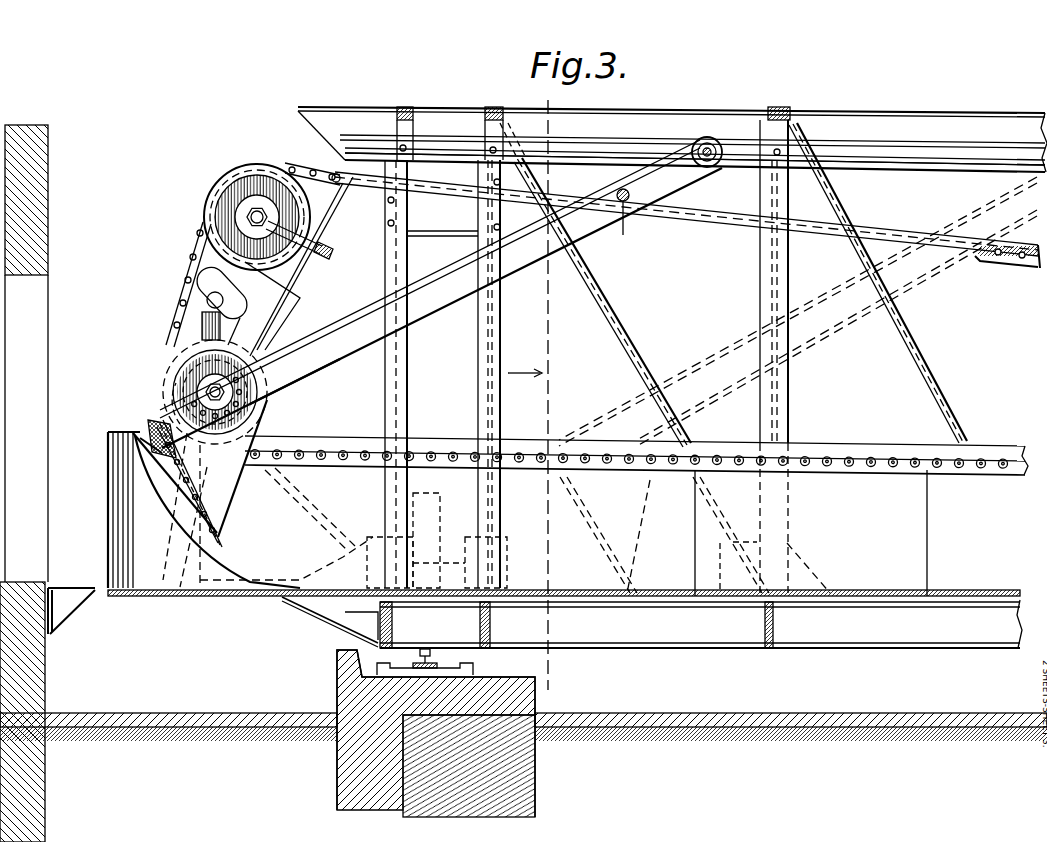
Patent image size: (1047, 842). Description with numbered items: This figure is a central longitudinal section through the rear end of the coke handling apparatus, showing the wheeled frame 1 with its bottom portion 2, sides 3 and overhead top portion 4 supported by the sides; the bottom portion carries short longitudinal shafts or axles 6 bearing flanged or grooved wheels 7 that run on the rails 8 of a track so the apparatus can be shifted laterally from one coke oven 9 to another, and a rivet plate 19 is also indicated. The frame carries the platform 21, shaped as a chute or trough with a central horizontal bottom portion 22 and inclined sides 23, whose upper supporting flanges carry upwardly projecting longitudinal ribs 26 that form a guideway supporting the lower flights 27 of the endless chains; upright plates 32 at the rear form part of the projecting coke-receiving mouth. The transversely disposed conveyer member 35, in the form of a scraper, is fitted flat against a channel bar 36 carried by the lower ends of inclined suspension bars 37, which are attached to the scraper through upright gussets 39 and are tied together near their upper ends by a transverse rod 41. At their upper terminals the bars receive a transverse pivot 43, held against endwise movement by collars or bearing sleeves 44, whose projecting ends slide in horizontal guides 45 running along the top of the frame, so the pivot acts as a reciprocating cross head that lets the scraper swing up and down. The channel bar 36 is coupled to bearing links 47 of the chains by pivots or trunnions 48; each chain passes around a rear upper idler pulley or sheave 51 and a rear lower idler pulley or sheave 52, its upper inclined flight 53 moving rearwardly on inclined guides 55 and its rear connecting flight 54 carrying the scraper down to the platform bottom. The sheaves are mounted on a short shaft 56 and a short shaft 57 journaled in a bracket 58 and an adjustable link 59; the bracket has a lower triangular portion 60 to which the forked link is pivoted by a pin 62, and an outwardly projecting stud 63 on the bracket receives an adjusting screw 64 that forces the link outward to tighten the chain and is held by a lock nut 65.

The wheeled frame 1 is at (676, 358).
The bottom portion 2 is at (712, 649).
The sides 3 is at (760, 281).
The overhead top portion 4 is at (672, 127).
The short longitudinal shafts or axles 6 is at (547, 388).
The flanged or grooved wheels 7 is at (445, 659).
The rails 8 is at (416, 664).
The coke oven 9 is at (50, 332).
The rivet plate 19 is at (215, 416).
The platform 21 is at (335, 510).
The central horizontal bottom portion 22 is at (663, 601).
The inclined sides 23 is at (695, 520).
The longitudinal ribs 26 is at (356, 468).
The lower flights 27 is at (357, 438).
The upright plates 32 is at (204, 510).
The conveyer member 35 is at (224, 547).
The channel bar 36 is at (150, 428).
The suspension bars 37 is at (368, 327).
The gussets 39 is at (228, 500).
The transverse rod 41 is at (624, 222).
The transverse pivot 43 is at (708, 168).
The collars or bearing sleeves 44 is at (709, 137).
The horizontal guides 45 is at (887, 156).
The bearing links 47 is at (143, 452).
The pivots or trunnions 48 is at (183, 404).
The rear upper idler pulley or sheave 51 is at (242, 172).
The rear lower idler pulley or sheave 52 is at (165, 372).
The upper inclined flight 53 is at (1007, 262).
The rear connecting flight 54 is at (188, 268).
The inclined guides 55 is at (698, 222).
The short shaft 56 is at (258, 211).
The short shaft 57 is at (288, 350).
The bracket 58 is at (200, 322).
The adjustable link 59 is at (212, 256).
The lower triangular portion 60 is at (220, 334).
The pin 62 is at (207, 298).
The outwardly projecting stud 63 is at (325, 189).
The adjusting screw 64 is at (332, 255).
The lock nut 65 is at (316, 258).